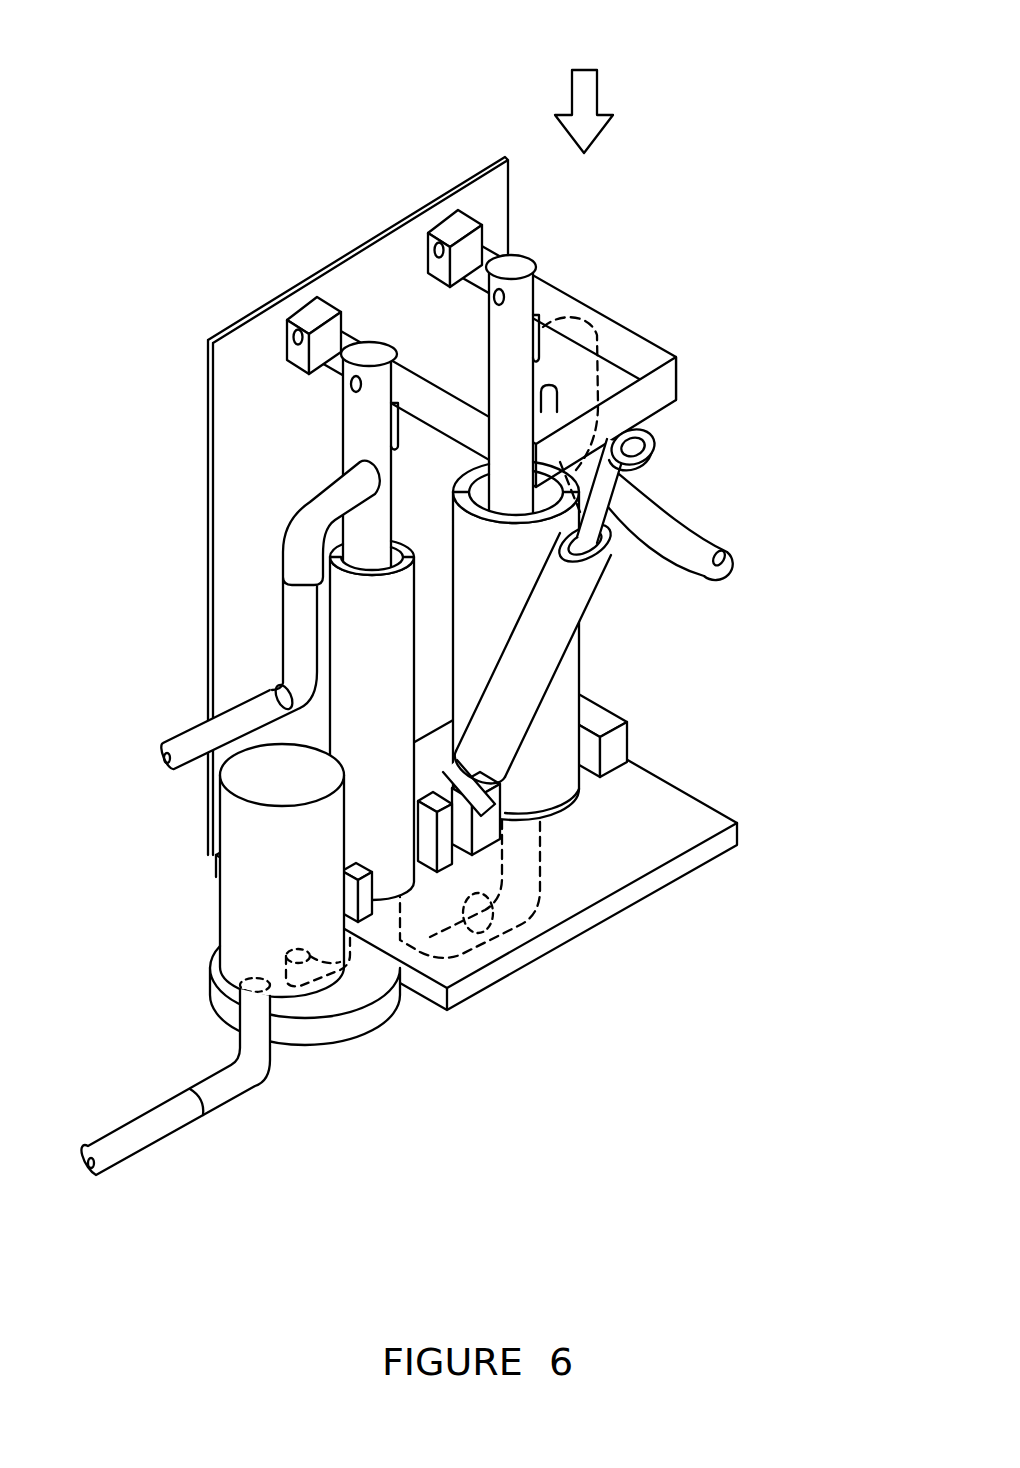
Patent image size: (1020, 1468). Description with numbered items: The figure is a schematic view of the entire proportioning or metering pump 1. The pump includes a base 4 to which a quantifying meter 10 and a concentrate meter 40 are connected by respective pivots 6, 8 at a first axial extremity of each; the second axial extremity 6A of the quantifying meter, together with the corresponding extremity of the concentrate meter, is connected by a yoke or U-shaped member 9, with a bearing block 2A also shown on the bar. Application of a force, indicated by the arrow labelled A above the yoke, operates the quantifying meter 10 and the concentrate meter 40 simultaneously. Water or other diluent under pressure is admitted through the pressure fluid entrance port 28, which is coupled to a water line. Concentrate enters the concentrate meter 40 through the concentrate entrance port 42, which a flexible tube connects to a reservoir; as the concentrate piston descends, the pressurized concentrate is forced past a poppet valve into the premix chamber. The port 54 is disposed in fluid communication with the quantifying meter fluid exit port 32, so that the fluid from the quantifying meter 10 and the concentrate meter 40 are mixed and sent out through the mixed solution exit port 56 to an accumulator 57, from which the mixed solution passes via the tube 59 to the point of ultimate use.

The proportioning or metering pump 1 is at (433, 595).
The bearing block 2A is at (282, 330).
The base 4 is at (740, 824).
The pivot 6 is at (630, 733).
The second axial extremity 6A is at (433, 233).
The pivot 8 is at (457, 850).
The yoke or U-shaped member 9 is at (677, 378).
The quantifying meter 10 is at (580, 650).
The pressure fluid entrance port 28 is at (682, 527).
The quantifying meter fluid exit port 32 is at (543, 820).
The concentrate meter 40 is at (288, 606).
The concentrate entrance port 42 is at (194, 724).
The port 54 is at (470, 950).
The mixed solution exit port 56 is at (322, 983).
The accumulator 57 is at (220, 927).
The tube 59 is at (141, 1110).